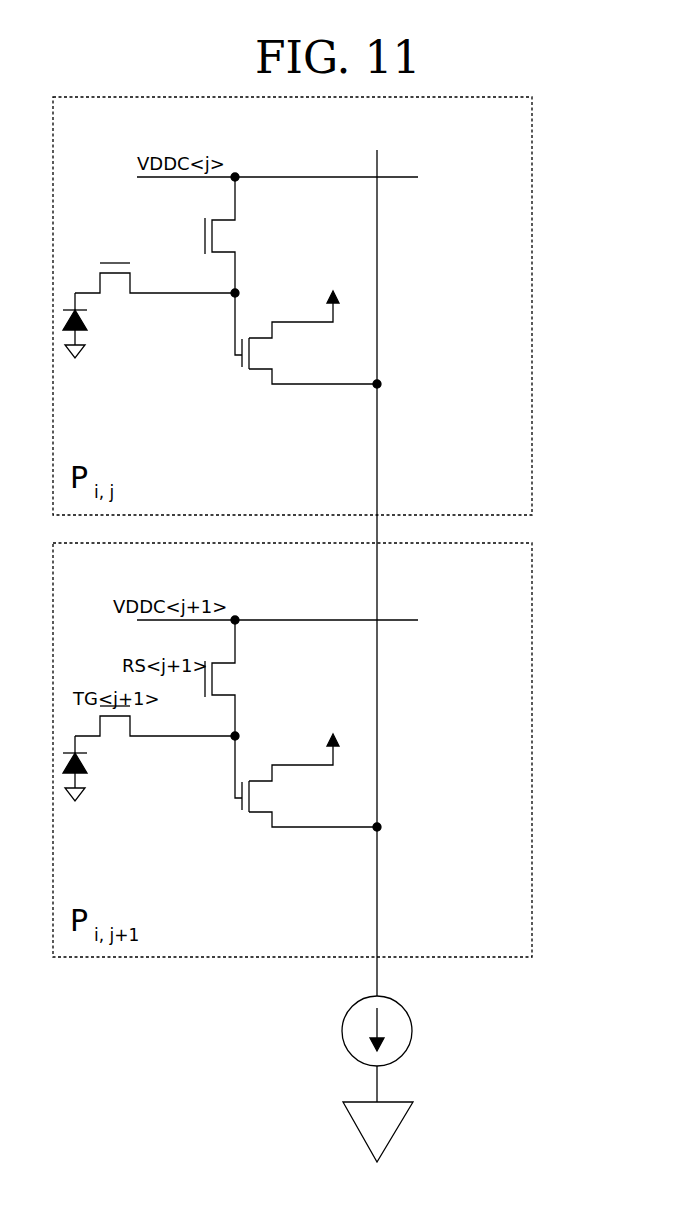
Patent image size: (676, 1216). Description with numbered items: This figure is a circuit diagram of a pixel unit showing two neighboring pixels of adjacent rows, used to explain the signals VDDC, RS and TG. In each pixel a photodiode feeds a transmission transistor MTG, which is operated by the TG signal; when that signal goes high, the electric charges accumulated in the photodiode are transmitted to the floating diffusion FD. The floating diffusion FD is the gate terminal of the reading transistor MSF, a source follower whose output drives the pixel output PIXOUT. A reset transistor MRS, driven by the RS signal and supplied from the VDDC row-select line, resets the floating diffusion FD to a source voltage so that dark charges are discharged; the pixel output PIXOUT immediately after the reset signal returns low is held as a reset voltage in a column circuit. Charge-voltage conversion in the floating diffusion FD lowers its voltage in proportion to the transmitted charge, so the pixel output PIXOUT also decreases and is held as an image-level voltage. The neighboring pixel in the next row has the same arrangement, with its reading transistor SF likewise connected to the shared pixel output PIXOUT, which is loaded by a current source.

The pixel output PIXOUT is at (413, 609).
The reset transistor MRS is at (208, 235).
The transmission transistor MTG is at (155, 280).
The floating diffusion FD is at (227, 338).
The reading transistor MSF is at (309, 325).
The reading transistor SF is at (294, 769).